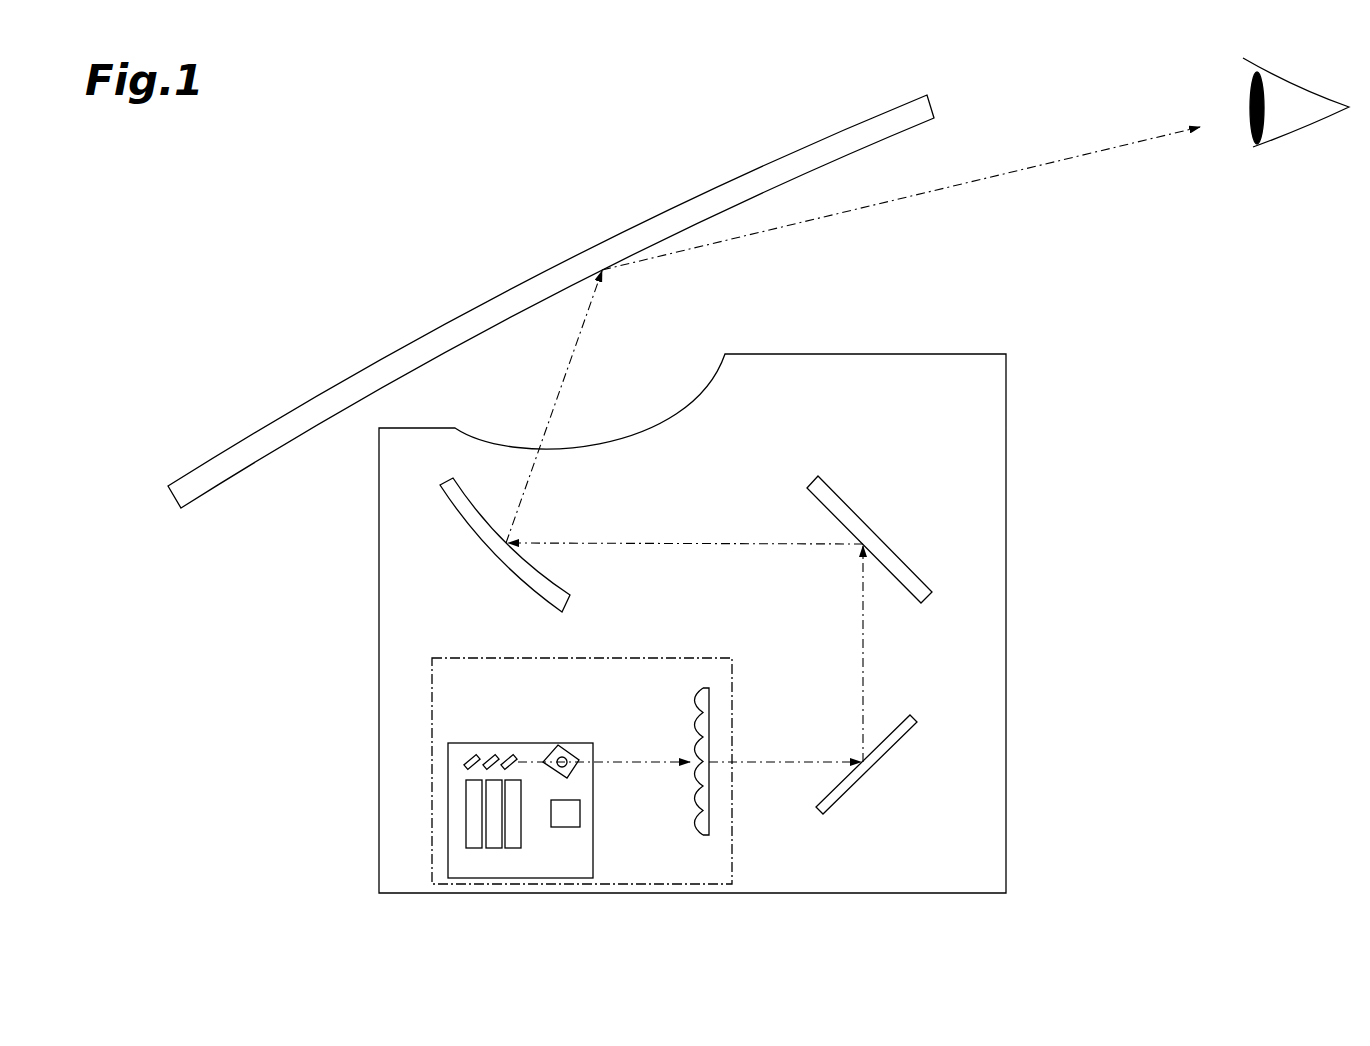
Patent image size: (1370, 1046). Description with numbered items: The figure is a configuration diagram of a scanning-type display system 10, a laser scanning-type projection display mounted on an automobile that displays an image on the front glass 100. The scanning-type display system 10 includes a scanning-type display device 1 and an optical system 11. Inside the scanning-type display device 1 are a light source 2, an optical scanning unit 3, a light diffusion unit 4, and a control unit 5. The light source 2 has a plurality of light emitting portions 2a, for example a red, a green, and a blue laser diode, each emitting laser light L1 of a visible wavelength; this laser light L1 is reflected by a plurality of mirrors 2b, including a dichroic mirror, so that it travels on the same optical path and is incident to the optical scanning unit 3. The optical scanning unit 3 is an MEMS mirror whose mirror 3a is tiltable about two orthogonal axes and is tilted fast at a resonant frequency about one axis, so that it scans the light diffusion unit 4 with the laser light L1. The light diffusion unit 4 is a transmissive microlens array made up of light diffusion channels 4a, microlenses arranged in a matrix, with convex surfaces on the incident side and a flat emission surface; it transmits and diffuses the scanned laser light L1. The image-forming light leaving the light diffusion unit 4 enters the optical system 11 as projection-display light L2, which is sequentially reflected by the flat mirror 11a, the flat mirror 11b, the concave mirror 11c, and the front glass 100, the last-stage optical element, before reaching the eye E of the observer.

The front glass 100 is at (292, 413).
The eye of an observer E is at (1248, 128).
The projection-display light L2 is at (770, 240).
The scanning-type display system 10 is at (1073, 370).
The optical system 11 is at (968, 530).
The flat mirror 11a is at (888, 750).
The flat mirror 11b is at (895, 548).
The concave mirror 11c is at (505, 570).
The laser light L1 is at (645, 762).
The scanning-type display device 1 is at (430, 714).
The light source 2 is at (460, 806).
The light emitting portions 2a is at (474, 850).
The mirrors 2b is at (508, 754).
The optical scanning unit 3 is at (581, 724).
The mirror 3a is at (570, 750).
The light diffusion unit 4 is at (711, 779).
The light diffusion channels 4a is at (690, 700).
The control unit 5 is at (580, 815).